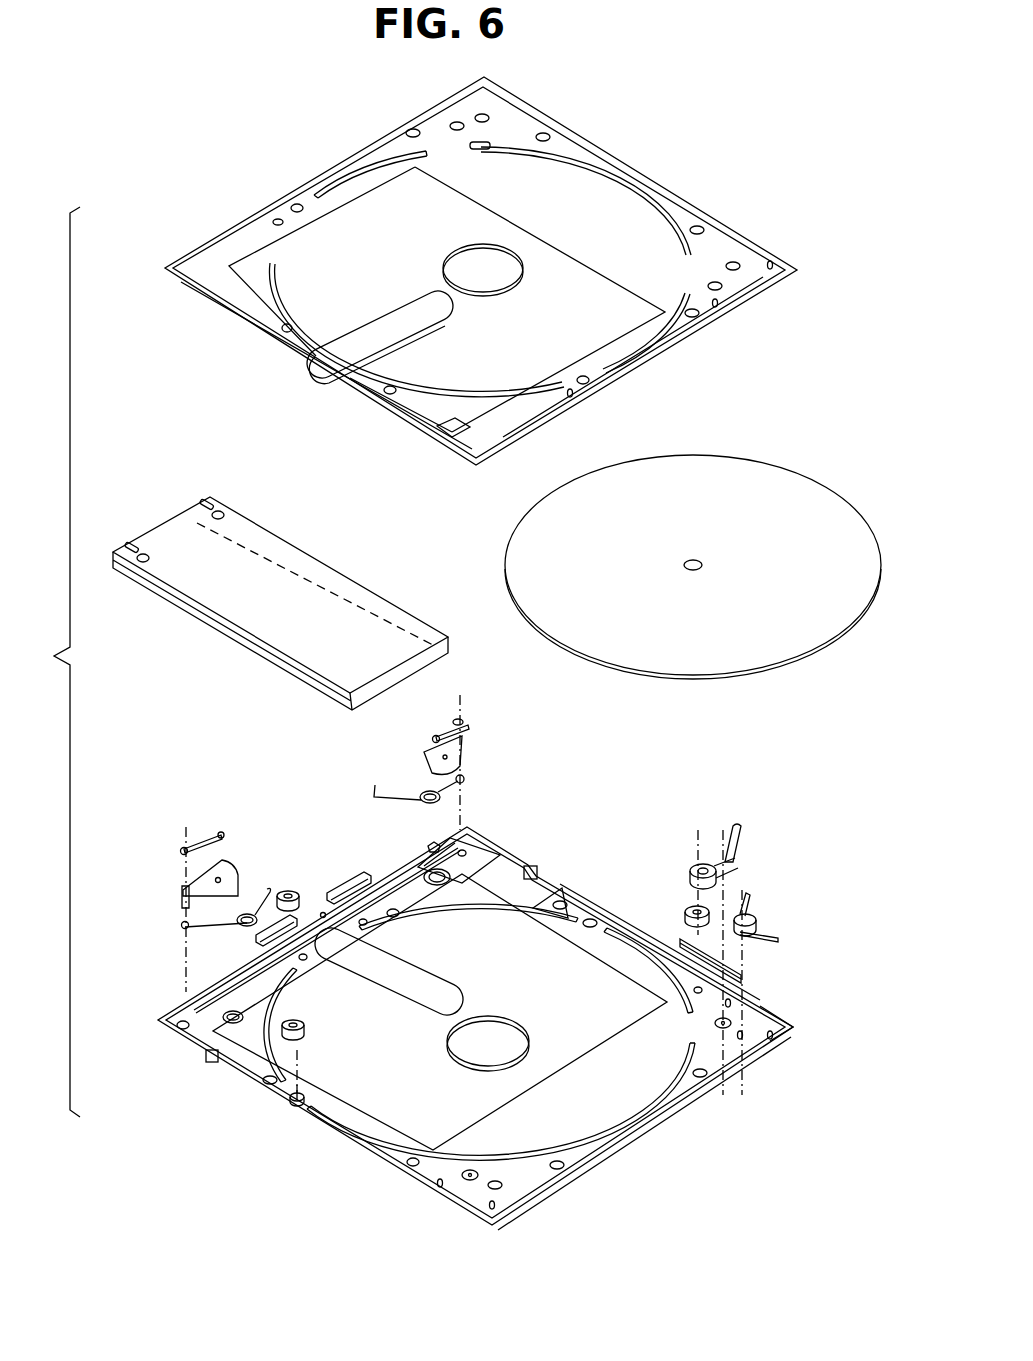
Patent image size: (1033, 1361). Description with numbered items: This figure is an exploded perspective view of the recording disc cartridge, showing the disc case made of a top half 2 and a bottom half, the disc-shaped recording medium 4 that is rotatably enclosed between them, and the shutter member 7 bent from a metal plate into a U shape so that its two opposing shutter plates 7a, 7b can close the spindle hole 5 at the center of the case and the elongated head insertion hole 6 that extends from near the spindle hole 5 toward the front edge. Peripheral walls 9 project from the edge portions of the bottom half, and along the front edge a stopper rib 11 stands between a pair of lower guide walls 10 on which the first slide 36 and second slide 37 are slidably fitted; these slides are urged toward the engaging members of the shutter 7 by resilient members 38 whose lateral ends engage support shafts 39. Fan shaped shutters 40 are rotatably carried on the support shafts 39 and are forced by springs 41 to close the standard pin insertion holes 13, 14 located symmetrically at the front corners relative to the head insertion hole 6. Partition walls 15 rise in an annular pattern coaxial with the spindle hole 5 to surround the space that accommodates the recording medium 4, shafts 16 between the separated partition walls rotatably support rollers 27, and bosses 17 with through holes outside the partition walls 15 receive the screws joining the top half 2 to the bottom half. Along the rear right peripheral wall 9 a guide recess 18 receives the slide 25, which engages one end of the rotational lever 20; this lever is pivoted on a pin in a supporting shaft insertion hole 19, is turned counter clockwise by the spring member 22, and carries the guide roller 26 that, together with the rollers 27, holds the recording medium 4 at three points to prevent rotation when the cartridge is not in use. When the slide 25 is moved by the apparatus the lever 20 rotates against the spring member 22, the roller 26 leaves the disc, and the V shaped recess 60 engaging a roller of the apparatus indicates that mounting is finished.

The top half 2 is at (613, 149).
The recording medium 4 is at (760, 473).
The spindle hole 5 is at (520, 283).
The head insertion hole 6 is at (388, 314).
The shutter member 7 is at (280, 621).
The shutter plate 7a is at (365, 590).
The shutter plate 7b is at (308, 678).
The peripheral wall 9 is at (585, 900).
The guide walls 10 is at (393, 882).
The stopper rib 11 is at (323, 910).
The standard pin insertion hole 13 is at (440, 848).
The standard pin insertion hole 14 is at (242, 1005).
The partition walls 15 is at (503, 905).
The shafts 16 is at (294, 1103).
The bosses 17 is at (268, 1086).
The guide recess 18 is at (765, 1008).
The supporting shaft insertion holes 19 is at (712, 1026).
The rotational lever 20 is at (740, 845).
The spring member 22 is at (757, 920).
The slide 25 is at (748, 975).
The guide roller 26 is at (690, 912).
The rollers 27 is at (290, 888).
The first slide 36 is at (352, 872).
The second slide 37 is at (258, 938).
The resilient members 38 is at (410, 788).
The support shafts 39 is at (182, 892).
The fan shaped shutters 40 is at (460, 757).
The springs 41 is at (440, 736).
The V shaped recess 60 is at (540, 868).